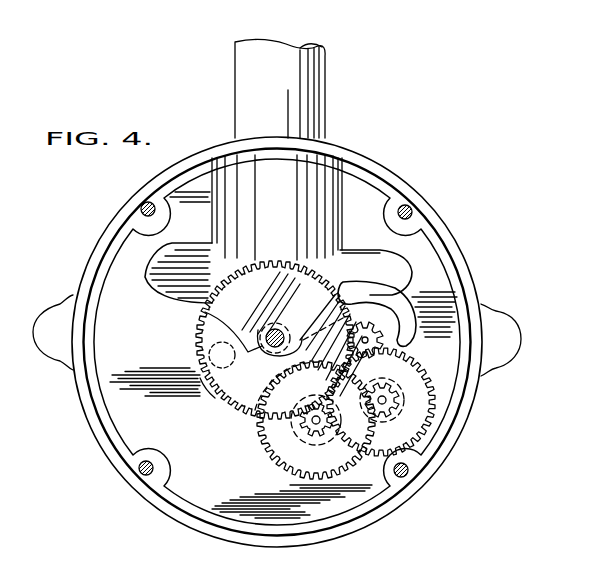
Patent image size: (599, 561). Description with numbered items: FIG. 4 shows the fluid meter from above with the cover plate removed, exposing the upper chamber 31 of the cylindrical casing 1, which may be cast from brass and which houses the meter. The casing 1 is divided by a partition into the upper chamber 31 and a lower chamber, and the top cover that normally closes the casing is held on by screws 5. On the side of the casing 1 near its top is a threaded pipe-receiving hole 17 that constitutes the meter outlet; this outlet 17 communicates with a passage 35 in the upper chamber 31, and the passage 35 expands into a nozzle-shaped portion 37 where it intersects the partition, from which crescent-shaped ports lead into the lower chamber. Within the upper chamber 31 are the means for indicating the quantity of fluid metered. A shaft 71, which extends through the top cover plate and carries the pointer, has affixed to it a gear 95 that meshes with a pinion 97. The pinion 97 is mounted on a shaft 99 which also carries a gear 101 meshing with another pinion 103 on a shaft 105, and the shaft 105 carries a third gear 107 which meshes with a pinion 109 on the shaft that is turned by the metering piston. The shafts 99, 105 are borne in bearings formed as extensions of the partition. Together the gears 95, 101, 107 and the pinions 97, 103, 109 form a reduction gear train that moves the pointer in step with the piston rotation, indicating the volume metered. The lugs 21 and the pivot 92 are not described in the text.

The cylindrical casing 1 is at (462, 262).
The screws 5 is at (141, 206).
The threaded pipe-receiving hole 17 is at (328, 132).
The ear lug 21 is at (62, 312).
The upper chamber 31 is at (127, 410).
The passage 35 is at (237, 218).
The nozzle-shaped portion 37 is at (168, 284).
The shaft 71 is at (278, 330).
The pivot 92 is at (222, 355).
The gear 95 is at (217, 397).
The pinion 97 is at (311, 426).
The shaft 99 is at (319, 432).
The gear 101 is at (258, 428).
The pinion 103 is at (392, 412).
The shaft 105 is at (388, 397).
The third gear 107 is at (413, 436).
The pinion 109 is at (373, 331).